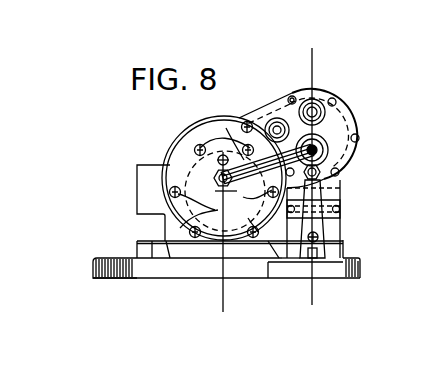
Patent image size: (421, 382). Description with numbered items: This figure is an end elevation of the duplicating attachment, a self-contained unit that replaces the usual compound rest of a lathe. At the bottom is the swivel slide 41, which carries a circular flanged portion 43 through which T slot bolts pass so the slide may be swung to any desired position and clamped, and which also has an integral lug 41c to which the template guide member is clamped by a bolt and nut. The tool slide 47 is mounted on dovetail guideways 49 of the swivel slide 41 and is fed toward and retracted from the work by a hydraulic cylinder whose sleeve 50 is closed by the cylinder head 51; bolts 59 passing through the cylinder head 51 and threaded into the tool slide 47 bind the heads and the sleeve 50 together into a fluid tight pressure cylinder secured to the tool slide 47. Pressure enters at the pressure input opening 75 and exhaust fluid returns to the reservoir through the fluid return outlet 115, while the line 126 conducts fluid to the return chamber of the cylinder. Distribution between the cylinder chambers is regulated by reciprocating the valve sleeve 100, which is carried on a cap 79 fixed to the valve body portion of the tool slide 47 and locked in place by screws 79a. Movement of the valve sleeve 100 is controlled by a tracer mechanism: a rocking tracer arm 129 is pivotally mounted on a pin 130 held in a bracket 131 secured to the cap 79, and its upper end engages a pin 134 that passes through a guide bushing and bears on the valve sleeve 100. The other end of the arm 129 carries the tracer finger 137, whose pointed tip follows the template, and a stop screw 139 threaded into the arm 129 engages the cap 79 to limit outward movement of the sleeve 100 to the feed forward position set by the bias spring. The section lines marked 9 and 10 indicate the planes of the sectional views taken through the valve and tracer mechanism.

The bottom swivel slide 41 is at (196, 270).
The integral lug 41c is at (350, 270).
The circular flanged portion 43 is at (108, 265).
The tool slide 47 is at (152, 172).
The dovetail guideways 49 is at (180, 254).
The sleeve 50 is at (184, 221).
The cylinder head 51 is at (190, 142).
The bolts 59 is at (213, 144).
The pressure input opening 75 is at (317, 100).
The cap 79 is at (342, 112).
The screws 79a is at (292, 96).
The valve sleeve 100 is at (350, 96).
The fluid return outlet 115 is at (273, 124).
The line 126 is at (333, 171).
The tracer arm 129 is at (300, 256).
The pin 130 is at (326, 194).
The bracket 131 is at (340, 210).
The pin 134 is at (334, 175).
The tracer finger 137 is at (310, 262).
The stop screw 139 is at (318, 237).
The section line 9- 9 is at (318, 58).
The section line 10- 10 is at (318, 128).